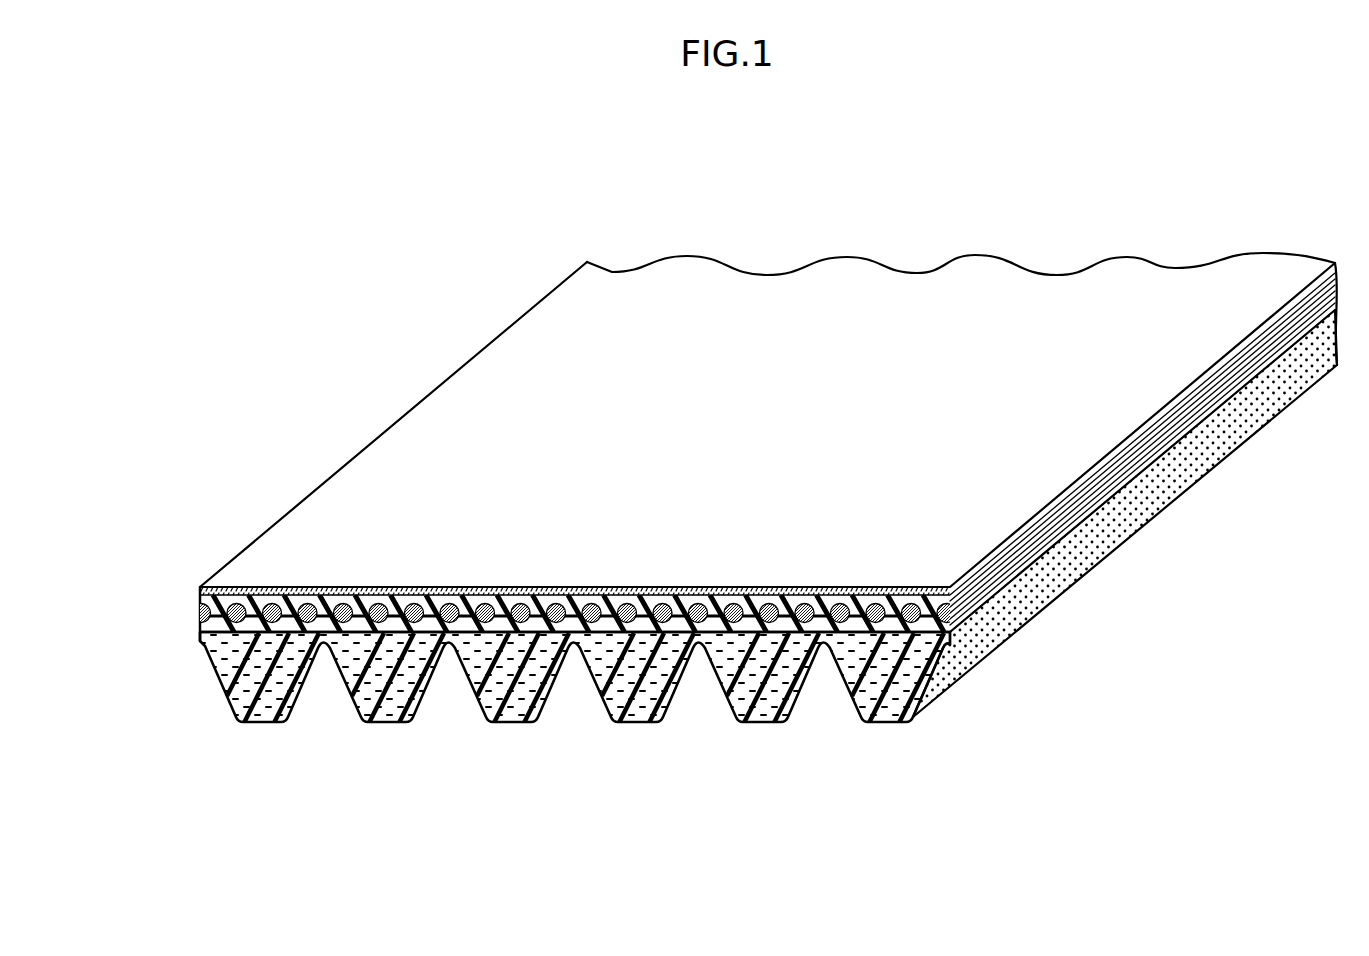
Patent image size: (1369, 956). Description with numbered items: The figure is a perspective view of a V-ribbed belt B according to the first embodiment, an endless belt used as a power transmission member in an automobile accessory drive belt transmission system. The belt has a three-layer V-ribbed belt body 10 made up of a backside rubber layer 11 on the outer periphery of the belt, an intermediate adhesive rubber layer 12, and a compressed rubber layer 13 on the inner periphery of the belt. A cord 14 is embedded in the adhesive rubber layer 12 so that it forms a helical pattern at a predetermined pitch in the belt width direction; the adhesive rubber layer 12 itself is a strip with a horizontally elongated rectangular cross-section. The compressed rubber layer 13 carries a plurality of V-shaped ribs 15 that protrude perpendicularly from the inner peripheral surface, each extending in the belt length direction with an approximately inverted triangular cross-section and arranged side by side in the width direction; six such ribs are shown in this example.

The V-ribbed belt B is at (598, 180).
The V-ribbed belt body 10 is at (443, 370).
The backside rubber layer 11 is at (653, 585).
The adhesive rubber layer 12 is at (212, 598).
The compressed rubber layer 13 is at (927, 667).
The cord 14 is at (206, 608).
The V-shaped ribs 15 is at (272, 702).